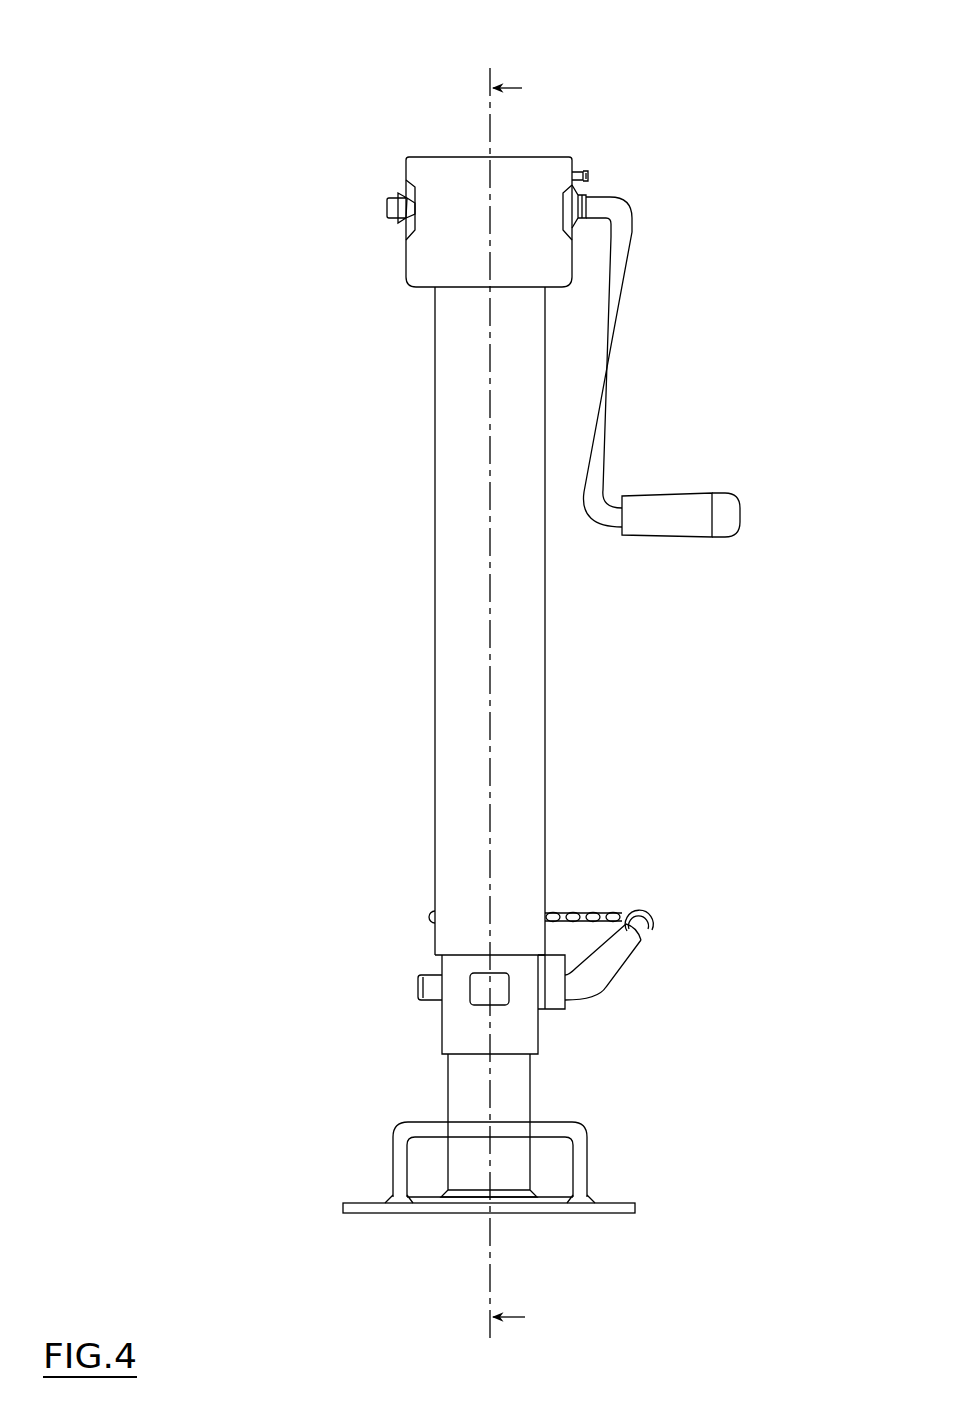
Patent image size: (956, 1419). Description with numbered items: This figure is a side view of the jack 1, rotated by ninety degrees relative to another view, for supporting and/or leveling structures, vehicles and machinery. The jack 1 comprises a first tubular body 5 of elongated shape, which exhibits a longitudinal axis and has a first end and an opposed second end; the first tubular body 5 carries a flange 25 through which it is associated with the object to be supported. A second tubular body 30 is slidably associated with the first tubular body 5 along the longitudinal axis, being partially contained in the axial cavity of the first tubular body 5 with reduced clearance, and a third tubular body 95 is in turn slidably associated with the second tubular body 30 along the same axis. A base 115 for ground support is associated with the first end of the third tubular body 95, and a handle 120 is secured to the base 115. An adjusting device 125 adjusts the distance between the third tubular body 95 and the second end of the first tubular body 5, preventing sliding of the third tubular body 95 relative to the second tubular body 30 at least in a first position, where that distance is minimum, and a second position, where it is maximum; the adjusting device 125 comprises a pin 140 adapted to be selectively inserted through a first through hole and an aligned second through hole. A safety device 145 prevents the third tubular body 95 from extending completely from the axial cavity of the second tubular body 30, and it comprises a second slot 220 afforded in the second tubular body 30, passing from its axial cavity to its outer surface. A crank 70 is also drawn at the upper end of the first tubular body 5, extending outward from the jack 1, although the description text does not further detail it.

The jack 1 is at (140, 120).
The first tubular body 5 is at (546, 621).
The flange 25 is at (407, 188).
The second tubular body 30 is at (520, 1018).
The crank handle 70 is at (613, 328).
The third tubular body 95 is at (513, 1087).
The base 115 is at (575, 1208).
The handle 120 is at (577, 1168).
The adjusting device 125 is at (705, 918).
The pin 140 is at (620, 968).
The safety device 145 is at (448, 970).
The second slot 220 is at (470, 990).